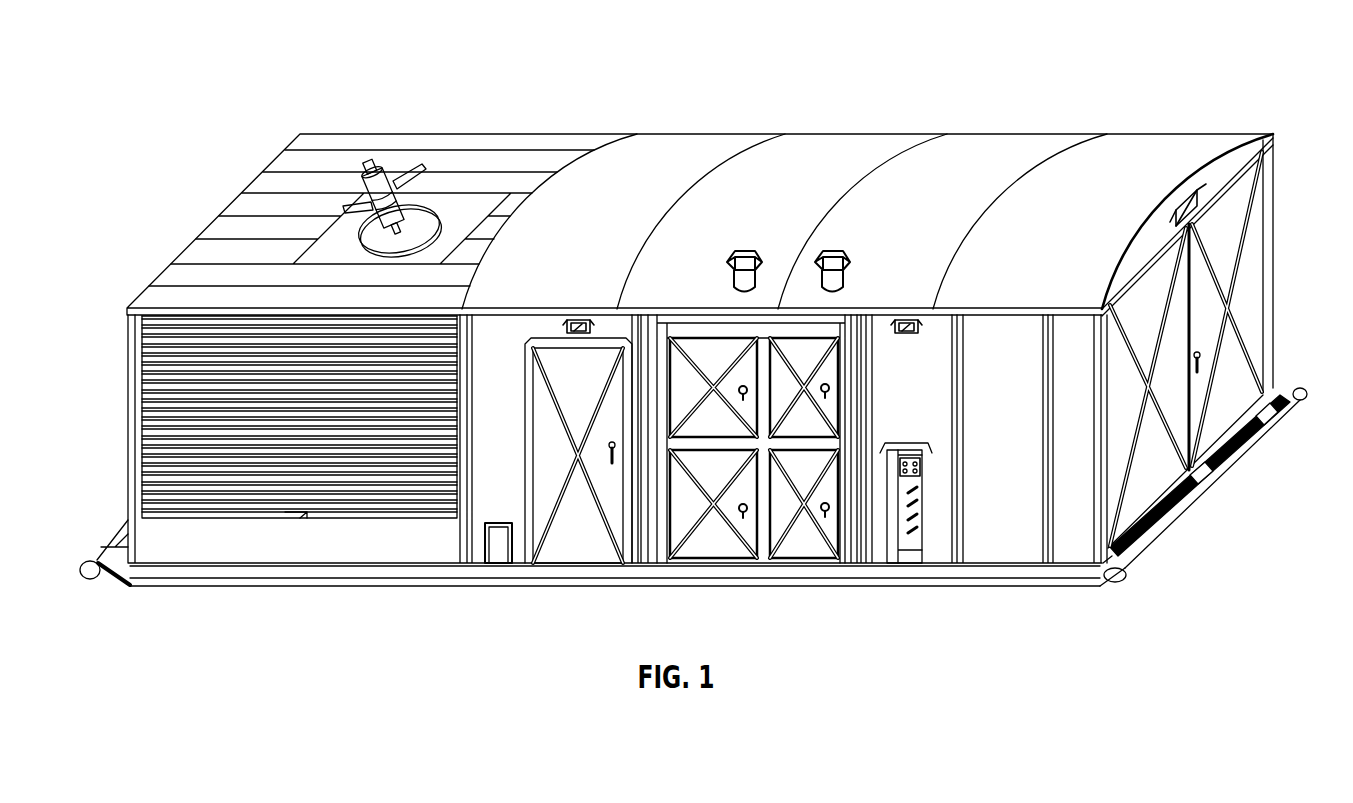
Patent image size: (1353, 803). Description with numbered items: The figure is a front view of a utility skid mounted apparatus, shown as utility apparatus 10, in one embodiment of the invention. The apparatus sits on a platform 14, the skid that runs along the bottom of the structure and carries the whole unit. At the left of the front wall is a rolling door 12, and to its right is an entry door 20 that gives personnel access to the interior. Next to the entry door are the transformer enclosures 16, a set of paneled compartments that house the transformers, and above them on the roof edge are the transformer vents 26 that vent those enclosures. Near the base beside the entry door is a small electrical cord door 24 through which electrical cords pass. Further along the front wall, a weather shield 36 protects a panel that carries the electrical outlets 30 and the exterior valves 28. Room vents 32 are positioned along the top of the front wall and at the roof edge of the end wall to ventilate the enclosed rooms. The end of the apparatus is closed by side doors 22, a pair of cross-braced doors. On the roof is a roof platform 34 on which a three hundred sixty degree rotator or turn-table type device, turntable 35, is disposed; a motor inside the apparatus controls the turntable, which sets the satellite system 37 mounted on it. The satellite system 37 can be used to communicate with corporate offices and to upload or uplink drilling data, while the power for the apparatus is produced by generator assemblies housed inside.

The utility apparatus 10 is at (286, 112).
The rolling door 12 is at (148, 367).
The platform 14 is at (207, 575).
The transformer enclosures 16 is at (745, 527).
The entry door 20 is at (580, 548).
The side doors 22 is at (1257, 262).
The electrical cord door 24 is at (497, 548).
The transformer vents 26 is at (748, 253).
The exterior valves 28 is at (915, 502).
The electrical outlets 30 is at (915, 470).
The room vents 32 is at (578, 320).
The roof platform 34 is at (342, 233).
The turntable 35 is at (433, 205).
The weather shield 36 is at (905, 445).
The satellite system 37 is at (376, 165).